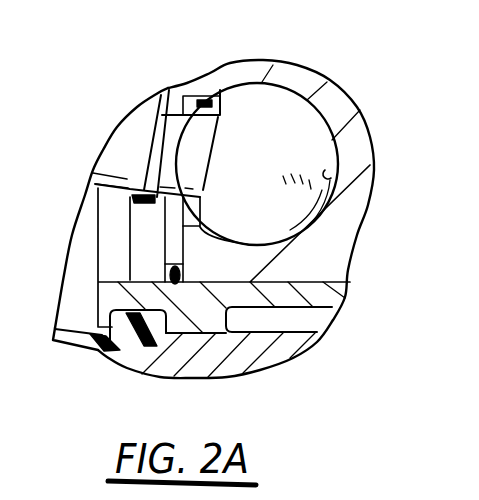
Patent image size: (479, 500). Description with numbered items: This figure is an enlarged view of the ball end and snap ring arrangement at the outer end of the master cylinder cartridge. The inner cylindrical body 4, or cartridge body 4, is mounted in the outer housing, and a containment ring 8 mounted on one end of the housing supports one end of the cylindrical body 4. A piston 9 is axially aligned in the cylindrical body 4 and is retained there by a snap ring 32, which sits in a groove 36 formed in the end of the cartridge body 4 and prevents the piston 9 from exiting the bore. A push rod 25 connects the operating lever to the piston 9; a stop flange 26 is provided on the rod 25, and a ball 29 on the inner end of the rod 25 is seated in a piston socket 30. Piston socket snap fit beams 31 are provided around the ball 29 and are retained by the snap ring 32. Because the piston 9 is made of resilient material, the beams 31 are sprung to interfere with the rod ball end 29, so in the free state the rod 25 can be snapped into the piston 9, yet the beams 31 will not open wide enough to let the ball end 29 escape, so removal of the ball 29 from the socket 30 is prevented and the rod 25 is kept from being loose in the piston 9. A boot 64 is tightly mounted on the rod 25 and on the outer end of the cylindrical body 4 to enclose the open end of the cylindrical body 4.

The cylindrical body 4 is at (320, 303).
The containment ring 8 is at (255, 365).
The piston 9 is at (323, 264).
The push rod 25 is at (124, 188).
The stop flange 26 is at (155, 118).
The ball 29 is at (312, 150).
The piston socket 30 is at (333, 167).
The piston socket snap fit beams 31 is at (230, 93).
The snap ring 32 is at (172, 266).
The groove 36 is at (190, 278).
The boot 64 is at (77, 348).